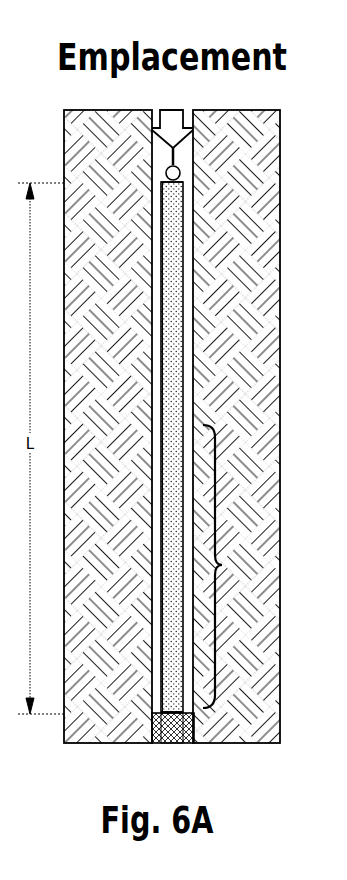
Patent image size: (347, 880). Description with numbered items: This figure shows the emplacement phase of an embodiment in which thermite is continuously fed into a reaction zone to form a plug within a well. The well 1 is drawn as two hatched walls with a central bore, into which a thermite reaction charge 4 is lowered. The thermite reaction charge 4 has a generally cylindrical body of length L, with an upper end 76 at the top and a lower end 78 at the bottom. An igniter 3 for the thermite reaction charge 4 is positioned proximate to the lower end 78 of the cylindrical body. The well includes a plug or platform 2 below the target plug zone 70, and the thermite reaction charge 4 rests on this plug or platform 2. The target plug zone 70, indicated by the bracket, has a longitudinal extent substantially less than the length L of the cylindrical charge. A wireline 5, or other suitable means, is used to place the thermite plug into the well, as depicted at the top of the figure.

The mould / emplacement block 1 is at (77, 393).
The plug or platform 2 is at (180, 747).
The igniter 3 is at (168, 745).
The thermite reaction charge 4 is at (160, 245).
The wireline 5 is at (190, 153).
The target plug zone 70 is at (227, 566).
The upper end 76 is at (158, 163).
The lower end 78 is at (157, 713).